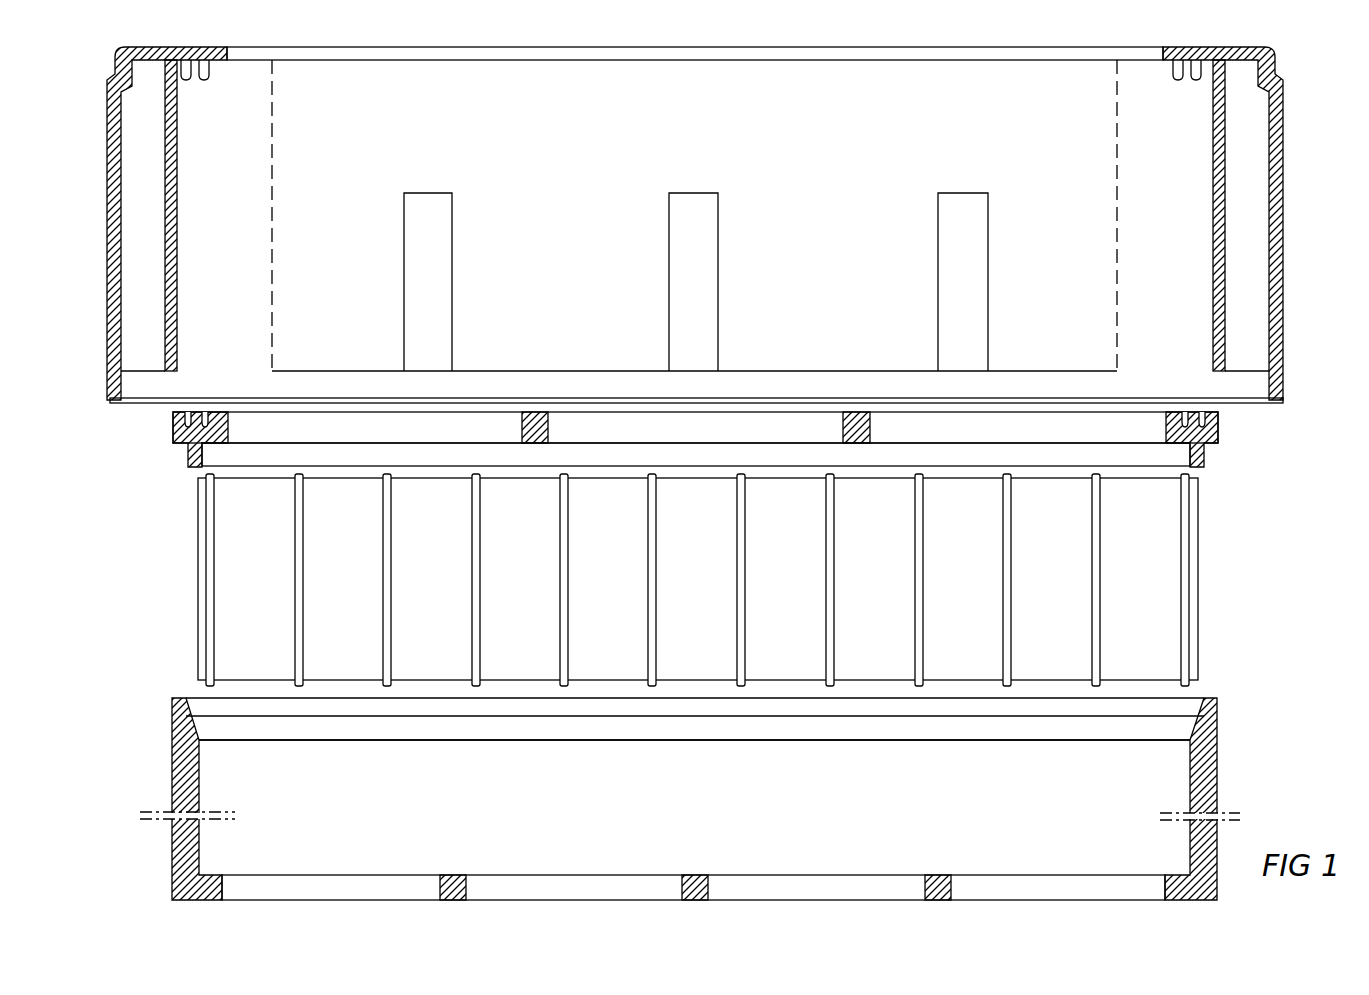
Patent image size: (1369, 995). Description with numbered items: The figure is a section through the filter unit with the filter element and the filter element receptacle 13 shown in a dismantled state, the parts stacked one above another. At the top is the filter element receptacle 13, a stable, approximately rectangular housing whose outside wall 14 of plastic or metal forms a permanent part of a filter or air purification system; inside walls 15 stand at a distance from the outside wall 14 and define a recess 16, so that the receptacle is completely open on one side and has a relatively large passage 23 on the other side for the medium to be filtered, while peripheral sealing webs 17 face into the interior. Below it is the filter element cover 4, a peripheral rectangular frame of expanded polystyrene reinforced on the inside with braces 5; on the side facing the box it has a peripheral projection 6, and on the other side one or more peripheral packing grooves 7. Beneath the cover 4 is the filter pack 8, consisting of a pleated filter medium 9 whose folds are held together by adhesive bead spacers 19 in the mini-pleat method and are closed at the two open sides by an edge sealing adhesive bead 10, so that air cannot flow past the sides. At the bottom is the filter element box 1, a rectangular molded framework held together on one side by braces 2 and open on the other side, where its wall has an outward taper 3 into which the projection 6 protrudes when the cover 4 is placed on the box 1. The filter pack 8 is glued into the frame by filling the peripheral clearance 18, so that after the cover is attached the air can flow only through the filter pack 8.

The filter element box 1 is at (703, 758).
The braces 2 is at (683, 890).
The taper 3 is at (172, 725).
The filter element cover 4 is at (705, 406).
The braces 5 is at (549, 425).
The peripheral projection 6 is at (190, 457).
The peripheral packing grooves 7 is at (205, 412).
The filter pack 8 is at (709, 580).
The pleated filter medium 9 is at (253, 555).
The edge sealing adhesive bead 10 is at (205, 515).
The filter element receptacle 13 is at (738, 225).
The outside wall 14 is at (1285, 297).
The inside walls 15 is at (1212, 216).
The recess 16 is at (694, 215).
The peripheral sealing webs 17 is at (206, 82).
The peripheral clearance 18 is at (1192, 710).
The adhesive bead spacers 19 is at (918, 570).
The passage 23 is at (797, 52).